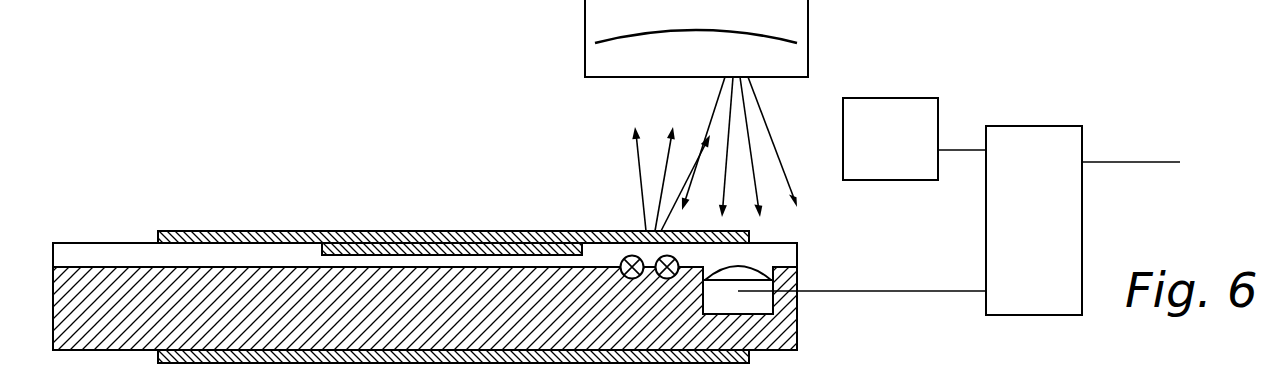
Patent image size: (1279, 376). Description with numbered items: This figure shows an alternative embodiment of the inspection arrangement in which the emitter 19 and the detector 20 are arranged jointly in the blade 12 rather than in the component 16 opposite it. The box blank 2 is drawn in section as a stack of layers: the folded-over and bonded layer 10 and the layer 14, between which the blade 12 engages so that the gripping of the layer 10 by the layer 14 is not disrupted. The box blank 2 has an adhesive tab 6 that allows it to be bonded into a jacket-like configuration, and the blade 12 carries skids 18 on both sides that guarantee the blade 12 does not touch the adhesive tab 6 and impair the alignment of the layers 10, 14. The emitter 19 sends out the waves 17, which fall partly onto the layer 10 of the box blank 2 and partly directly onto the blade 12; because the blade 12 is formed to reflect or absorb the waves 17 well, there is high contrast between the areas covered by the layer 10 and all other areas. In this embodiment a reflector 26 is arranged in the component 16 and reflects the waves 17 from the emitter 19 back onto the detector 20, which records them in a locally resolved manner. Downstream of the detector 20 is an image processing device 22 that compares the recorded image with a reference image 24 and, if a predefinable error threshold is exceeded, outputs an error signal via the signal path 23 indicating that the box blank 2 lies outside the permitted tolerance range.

The box blank 2 is at (414, 220).
The adhesive tab 6 is at (338, 250).
The layer 10 is at (480, 238).
The blade 12 is at (378, 277).
The layer 14 is at (520, 295).
The component 16 is at (602, 60).
The waves 17 is at (633, 148).
The skids 18 is at (302, 255).
The emitter 19 is at (683, 265).
The detector 20 is at (792, 290).
The image processing device 22 is at (1021, 212).
The signal path 23 is at (1142, 162).
The reference image 24 is at (877, 152).
The reflector 26 is at (745, 34).